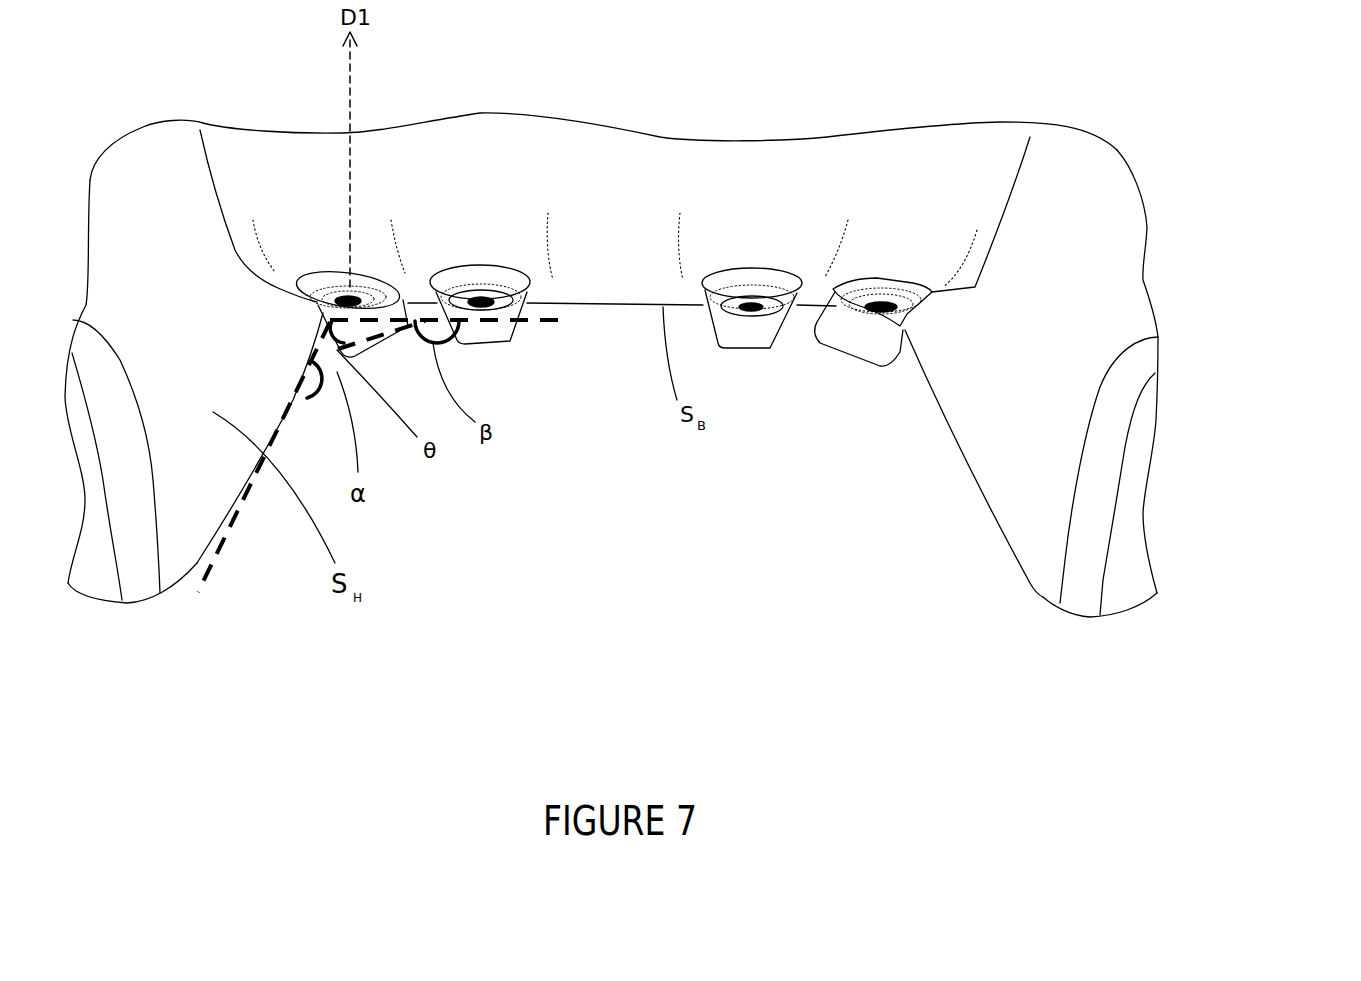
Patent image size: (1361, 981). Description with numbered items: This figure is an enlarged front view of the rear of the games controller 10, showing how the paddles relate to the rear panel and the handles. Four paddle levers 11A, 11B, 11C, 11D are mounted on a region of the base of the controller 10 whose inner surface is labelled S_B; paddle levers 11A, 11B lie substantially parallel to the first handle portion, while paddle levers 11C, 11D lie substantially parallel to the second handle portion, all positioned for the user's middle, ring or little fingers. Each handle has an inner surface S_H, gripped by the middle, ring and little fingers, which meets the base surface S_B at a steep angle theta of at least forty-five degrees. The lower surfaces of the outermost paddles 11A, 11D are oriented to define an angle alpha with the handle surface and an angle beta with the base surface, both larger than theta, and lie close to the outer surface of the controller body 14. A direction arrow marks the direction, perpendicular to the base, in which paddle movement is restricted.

The games controller 10 is at (1188, 177).
The controller body 14 is at (1085, 170).
The paddle lever 11A is at (320, 283).
The paddle lever 11B is at (483, 272).
The paddle lever 11C is at (772, 280).
The paddle lever 11D is at (903, 286).